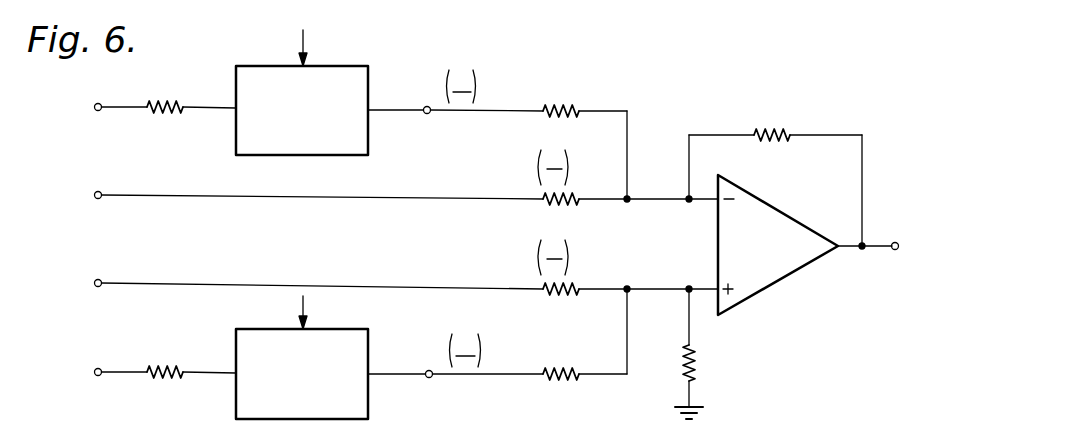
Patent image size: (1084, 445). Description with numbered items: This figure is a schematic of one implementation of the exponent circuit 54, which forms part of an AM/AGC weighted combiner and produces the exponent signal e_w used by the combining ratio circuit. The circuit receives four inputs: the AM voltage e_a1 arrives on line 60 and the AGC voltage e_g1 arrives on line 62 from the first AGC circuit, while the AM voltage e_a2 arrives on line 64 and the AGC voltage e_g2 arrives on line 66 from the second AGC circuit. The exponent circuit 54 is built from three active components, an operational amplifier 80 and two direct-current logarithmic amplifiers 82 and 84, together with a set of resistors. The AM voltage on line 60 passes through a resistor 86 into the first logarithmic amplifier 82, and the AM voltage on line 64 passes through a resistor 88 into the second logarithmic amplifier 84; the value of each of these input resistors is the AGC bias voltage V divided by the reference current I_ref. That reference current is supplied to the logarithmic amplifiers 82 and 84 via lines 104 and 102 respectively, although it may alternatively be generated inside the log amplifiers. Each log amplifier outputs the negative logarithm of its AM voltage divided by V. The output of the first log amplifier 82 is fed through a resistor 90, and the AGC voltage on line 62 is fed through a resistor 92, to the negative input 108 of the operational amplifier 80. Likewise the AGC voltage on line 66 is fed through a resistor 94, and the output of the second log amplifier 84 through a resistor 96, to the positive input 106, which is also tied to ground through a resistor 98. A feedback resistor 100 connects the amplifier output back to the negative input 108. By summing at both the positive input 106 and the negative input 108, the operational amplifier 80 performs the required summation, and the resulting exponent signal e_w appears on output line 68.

The exponent circuit 54 is at (655, 66).
The line 60 is at (125, 107).
The line 62 is at (137, 196).
The line 64 is at (121, 372).
The line 66 is at (140, 284).
The line 68 is at (872, 245).
The operational amplifier 80 is at (793, 279).
The direct-current logarithmic amplifier 82 is at (232, 142).
The direct-current logarithmic amplifier 84 is at (232, 399).
The resistor 86 is at (175, 114).
The resistor 88 is at (175, 378).
The resistor 90 is at (545, 114).
The resistor 92 is at (542, 202).
The resistor 94 is at (549, 293).
The resistor 96 is at (556, 380).
The resistor 98 is at (687, 348).
The resistor 100 is at (780, 141).
The line 102 is at (300, 308).
The line 104 is at (300, 41).
The positive input 106 is at (714, 286).
The negative input 108 is at (716, 201).